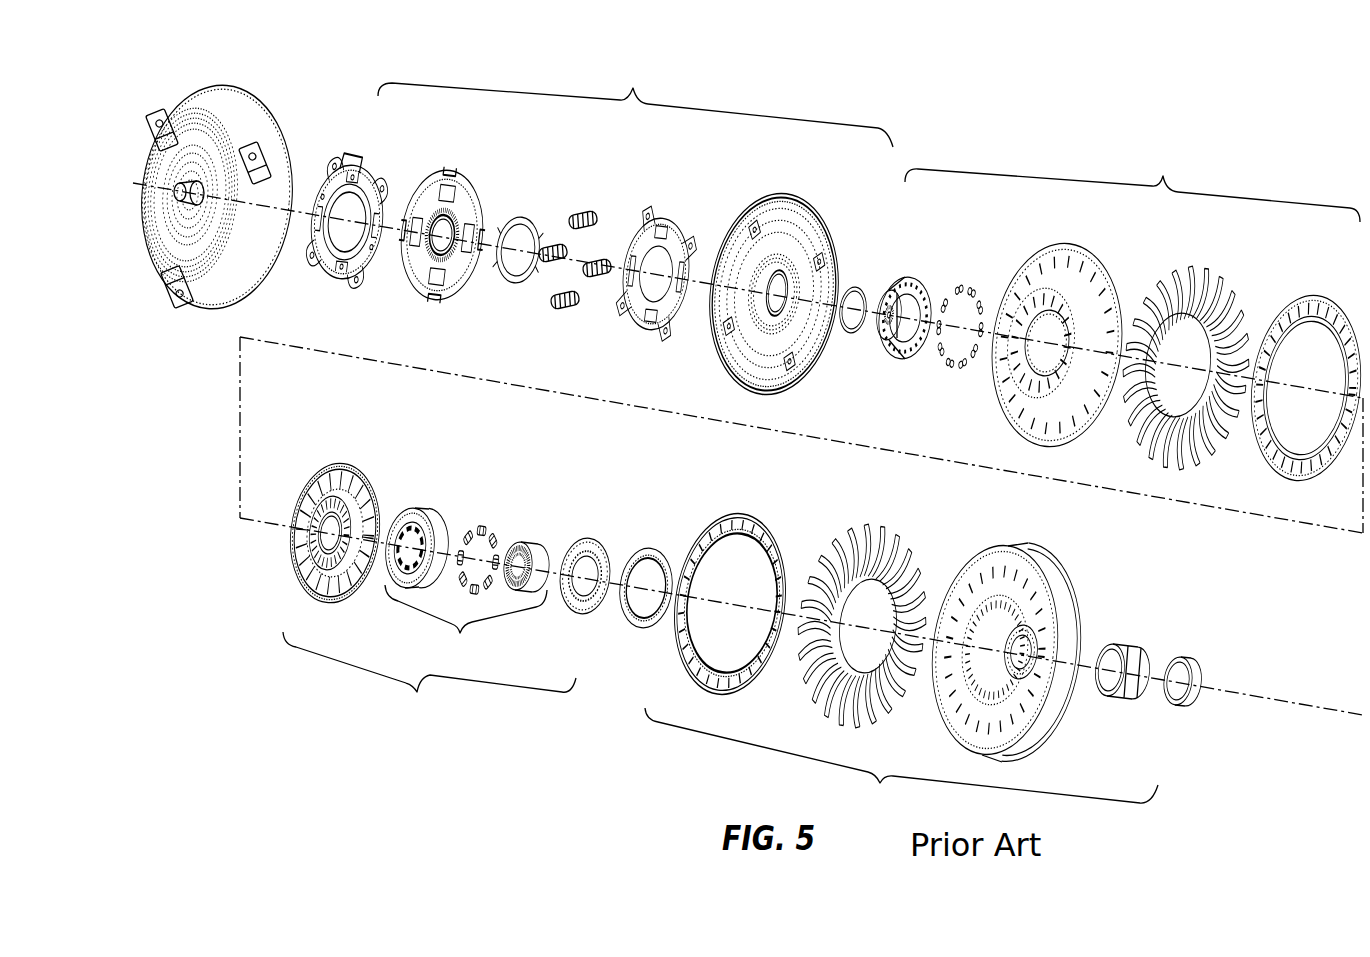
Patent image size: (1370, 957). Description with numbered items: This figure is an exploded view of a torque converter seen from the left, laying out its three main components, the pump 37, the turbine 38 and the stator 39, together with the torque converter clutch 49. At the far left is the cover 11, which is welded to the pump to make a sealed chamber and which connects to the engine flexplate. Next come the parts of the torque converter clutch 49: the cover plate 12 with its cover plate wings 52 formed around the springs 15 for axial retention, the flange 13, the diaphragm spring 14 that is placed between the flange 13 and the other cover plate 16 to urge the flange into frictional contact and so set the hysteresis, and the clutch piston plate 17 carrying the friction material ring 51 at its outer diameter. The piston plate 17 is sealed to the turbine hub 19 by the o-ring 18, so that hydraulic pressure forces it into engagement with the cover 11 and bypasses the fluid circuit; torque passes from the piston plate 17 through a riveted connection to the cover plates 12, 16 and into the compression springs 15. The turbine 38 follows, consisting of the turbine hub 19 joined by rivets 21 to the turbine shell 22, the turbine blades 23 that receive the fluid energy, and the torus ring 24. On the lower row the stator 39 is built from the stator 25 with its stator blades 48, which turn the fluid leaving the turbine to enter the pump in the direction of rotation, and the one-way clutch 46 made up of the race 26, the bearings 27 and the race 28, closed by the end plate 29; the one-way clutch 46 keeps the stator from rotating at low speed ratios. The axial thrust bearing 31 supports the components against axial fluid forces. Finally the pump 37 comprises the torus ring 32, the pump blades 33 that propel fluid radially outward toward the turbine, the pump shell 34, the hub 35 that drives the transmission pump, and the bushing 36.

The cover 11 is at (297, 113).
The cover plate 12 is at (387, 153).
The flange 13 is at (478, 167).
The diaphragm spring 14 is at (537, 200).
The springs 15 is at (613, 200).
The cover plate 16 is at (695, 198).
The clutch piston plate 17 is at (833, 190).
The o-ring 18 is at (878, 270).
The turbine hub 19 is at (933, 260).
The rivets 21 is at (983, 282).
The turbine shell 22 is at (1100, 247).
The turbine blades 23 is at (1223, 267).
The torus ring 24 is at (1322, 283).
The stator 25 is at (373, 457).
The race 26 is at (445, 490).
The bearings 27 is at (493, 513).
The race 28 is at (550, 523).
The end plate 29 is at (607, 523).
The axial thrust bearings 31 is at (672, 533).
The torus ring 32 is at (790, 518).
The pump blades 33 is at (928, 532).
The pump shell 34 is at (1090, 563).
The hub 35 is at (1147, 625).
The bushing 36 is at (1200, 643).
The pump 37 is at (901, 760).
The turbine 38 is at (1132, 177).
The stator 39 is at (429, 676).
The one-way clutch 46 is at (466, 625).
The stator blades 48 is at (340, 468).
The torque converter clutch 49 is at (635, 98).
The friction material ring 51 is at (776, 205).
The cover plate wings 52 is at (350, 178).